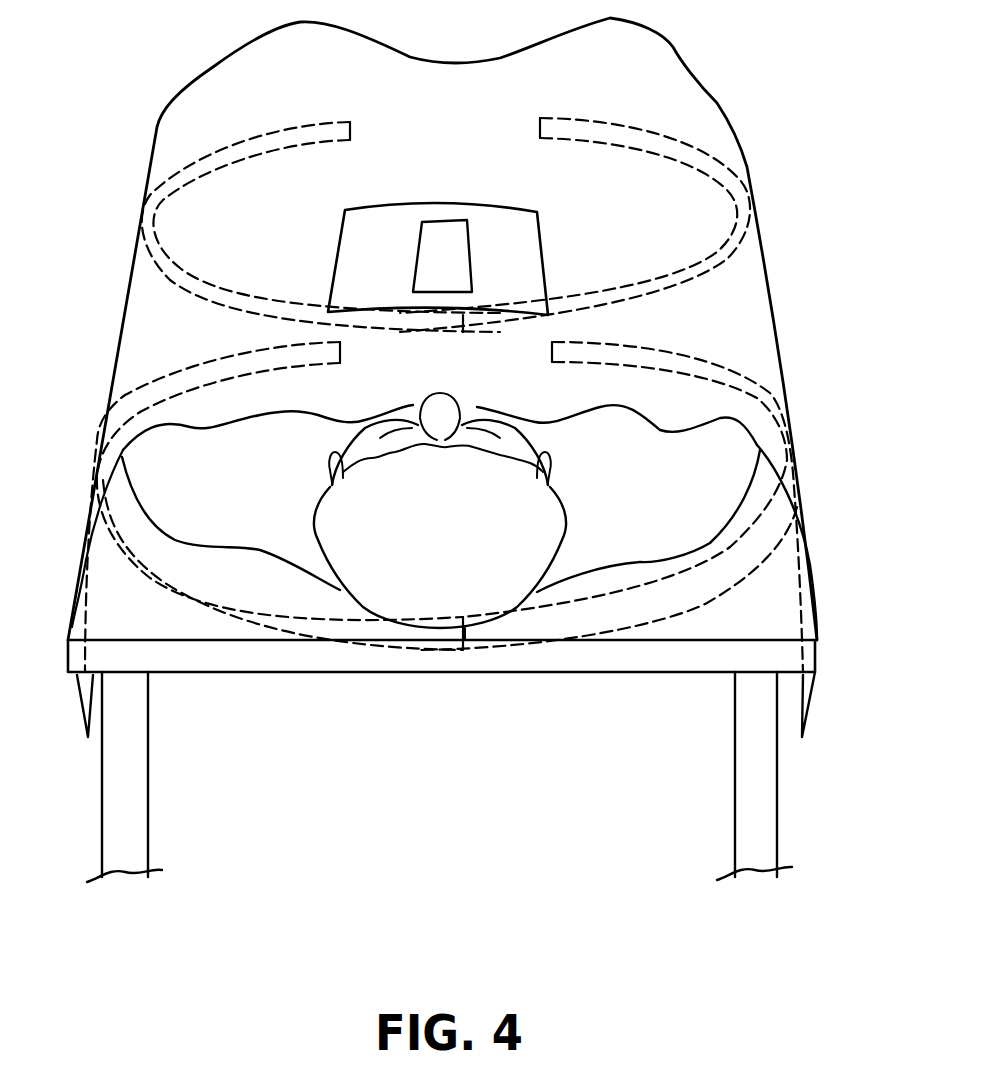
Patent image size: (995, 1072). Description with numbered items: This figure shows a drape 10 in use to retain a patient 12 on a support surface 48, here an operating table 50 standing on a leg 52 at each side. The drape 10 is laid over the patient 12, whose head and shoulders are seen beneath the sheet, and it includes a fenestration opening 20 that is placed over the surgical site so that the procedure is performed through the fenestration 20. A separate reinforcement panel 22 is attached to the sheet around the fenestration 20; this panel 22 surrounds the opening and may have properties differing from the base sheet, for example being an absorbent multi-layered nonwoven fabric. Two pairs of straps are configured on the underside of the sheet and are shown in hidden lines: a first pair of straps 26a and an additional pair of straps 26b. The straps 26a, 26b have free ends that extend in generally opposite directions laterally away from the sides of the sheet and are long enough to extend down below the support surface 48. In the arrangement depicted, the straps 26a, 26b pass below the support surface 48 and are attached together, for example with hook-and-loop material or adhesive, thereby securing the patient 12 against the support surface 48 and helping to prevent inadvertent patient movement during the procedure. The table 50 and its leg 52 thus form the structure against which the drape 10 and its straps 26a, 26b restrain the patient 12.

The drape 10 is at (783, 217).
The patient 12 is at (615, 476).
The fenestration opening 20 is at (437, 240).
The reinforcement panel 22 is at (355, 263).
The straps 26a is at (157, 372).
The additional pair of straps 26b is at (213, 138).
The support surface 48 is at (760, 612).
The operating table 50 is at (707, 628).
The leg 52 is at (127, 740).